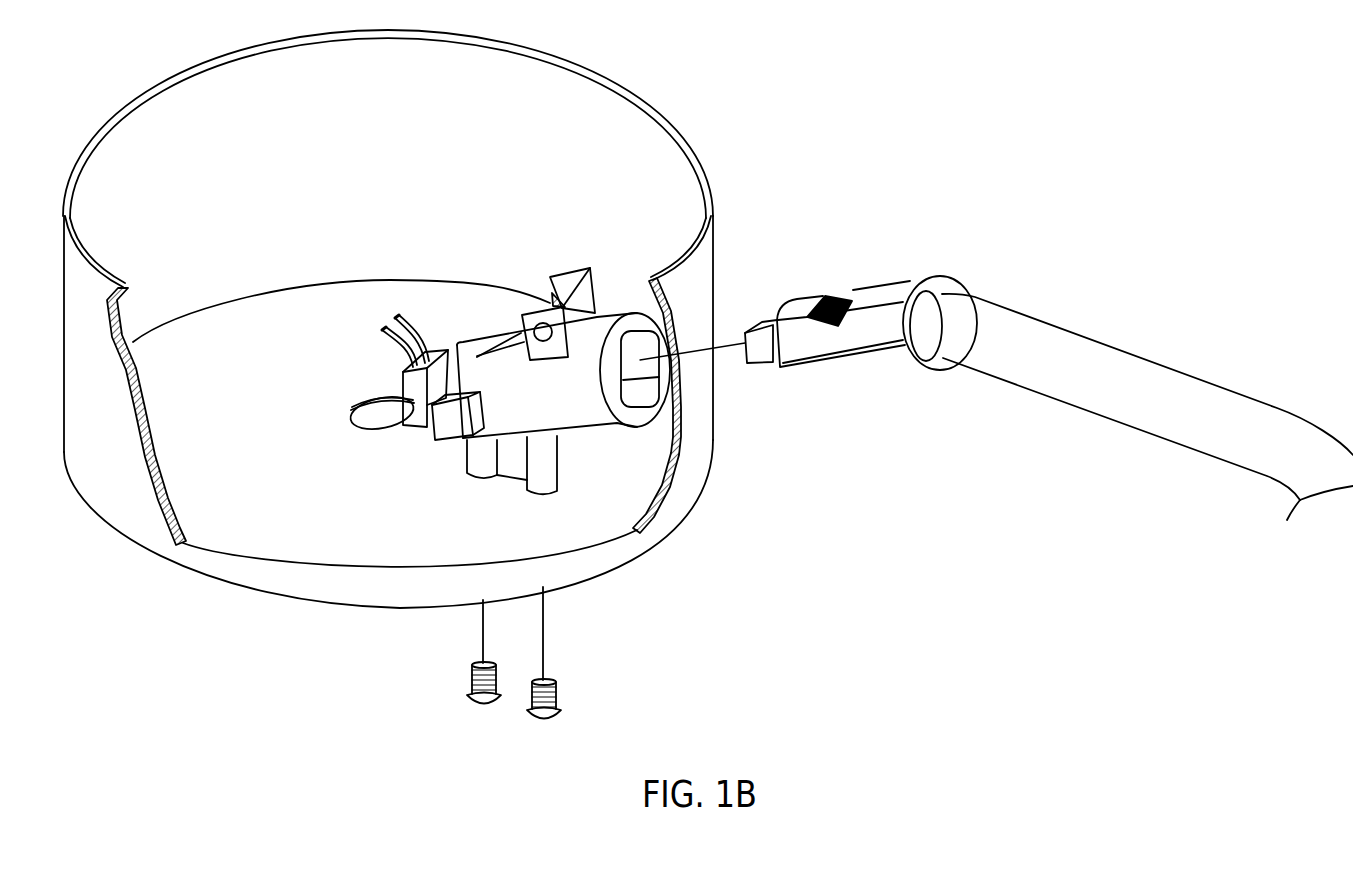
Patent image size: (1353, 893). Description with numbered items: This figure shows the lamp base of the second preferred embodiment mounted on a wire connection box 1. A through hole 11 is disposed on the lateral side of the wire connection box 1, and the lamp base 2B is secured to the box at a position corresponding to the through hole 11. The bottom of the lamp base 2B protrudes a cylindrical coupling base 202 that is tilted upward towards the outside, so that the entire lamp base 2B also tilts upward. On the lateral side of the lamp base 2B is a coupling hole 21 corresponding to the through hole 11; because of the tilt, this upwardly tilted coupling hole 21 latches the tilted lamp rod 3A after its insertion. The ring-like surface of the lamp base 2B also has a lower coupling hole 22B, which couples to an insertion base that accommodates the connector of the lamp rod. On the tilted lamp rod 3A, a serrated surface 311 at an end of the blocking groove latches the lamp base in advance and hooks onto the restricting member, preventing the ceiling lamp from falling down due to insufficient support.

The wire connection box 1 is at (660, 160).
The through hole 11 is at (677, 380).
The lamp base 2B is at (550, 454).
The coupling hole 21 is at (630, 370).
The lower coupling hole 22B is at (542, 328).
The cylindrical coupling base 202 is at (505, 457).
The tilted lamp rod 3A is at (1049, 365).
The serrated surface 311 is at (840, 300).